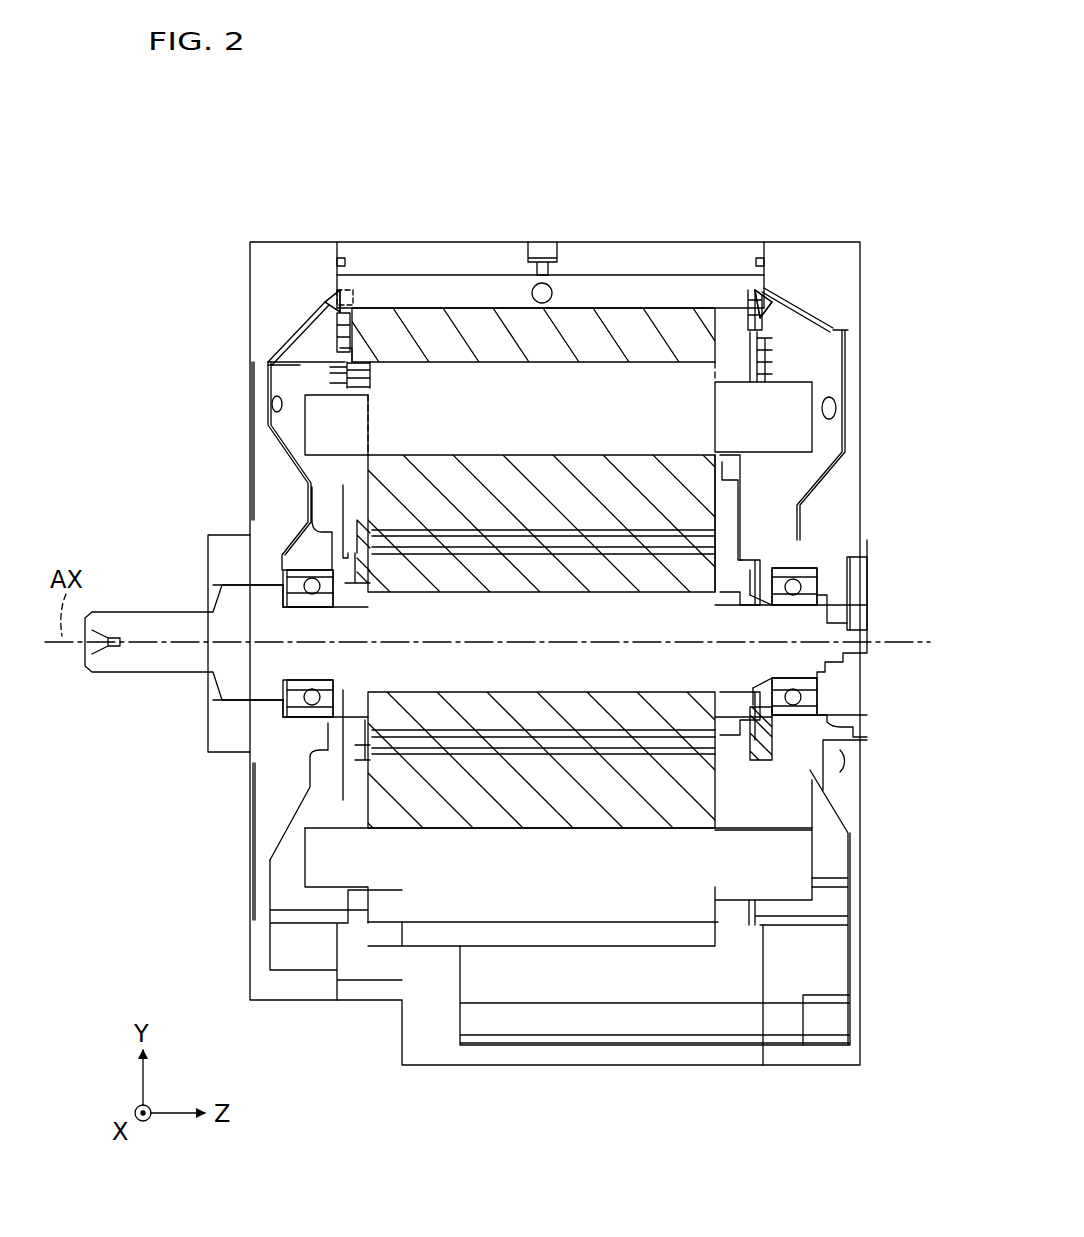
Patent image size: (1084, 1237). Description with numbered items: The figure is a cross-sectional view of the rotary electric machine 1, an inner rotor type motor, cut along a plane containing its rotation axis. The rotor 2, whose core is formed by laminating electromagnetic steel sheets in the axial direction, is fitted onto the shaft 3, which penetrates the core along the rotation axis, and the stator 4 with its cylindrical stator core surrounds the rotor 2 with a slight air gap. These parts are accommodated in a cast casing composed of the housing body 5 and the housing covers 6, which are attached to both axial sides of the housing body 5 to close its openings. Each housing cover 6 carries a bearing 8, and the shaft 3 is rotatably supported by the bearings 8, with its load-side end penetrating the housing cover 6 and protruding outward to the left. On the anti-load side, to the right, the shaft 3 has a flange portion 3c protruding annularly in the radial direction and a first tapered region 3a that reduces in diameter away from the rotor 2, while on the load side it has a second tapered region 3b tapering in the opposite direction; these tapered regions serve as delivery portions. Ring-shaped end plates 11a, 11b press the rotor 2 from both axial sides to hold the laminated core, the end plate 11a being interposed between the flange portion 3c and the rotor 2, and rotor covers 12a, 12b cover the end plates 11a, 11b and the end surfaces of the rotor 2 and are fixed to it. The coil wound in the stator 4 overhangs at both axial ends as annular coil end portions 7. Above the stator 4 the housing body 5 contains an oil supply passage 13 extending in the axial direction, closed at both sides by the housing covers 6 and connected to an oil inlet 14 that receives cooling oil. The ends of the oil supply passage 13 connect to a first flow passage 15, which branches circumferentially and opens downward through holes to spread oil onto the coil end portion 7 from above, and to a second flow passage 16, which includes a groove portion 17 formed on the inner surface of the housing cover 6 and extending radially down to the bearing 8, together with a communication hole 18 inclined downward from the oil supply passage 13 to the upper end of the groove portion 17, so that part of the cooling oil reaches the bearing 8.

The rotary electric machine 1 is at (720, 80).
The rotor 2 is at (423, 455).
The shaft 3 is at (112, 672).
The first tapered region 3a is at (753, 592).
The second tapered region 3b is at (333, 558).
The flange portion 3c is at (822, 742).
The stator 4 is at (620, 360).
The housing body 5 is at (662, 242).
The housing cover 6 is at (270, 238).
The coil end portion 7 is at (320, 396).
The bearing 8 is at (307, 718).
The end plate 11a is at (772, 760).
The end plate 11b is at (353, 758).
The rotor cover 12a is at (740, 485).
The rotor cover 12b is at (343, 493).
The oil supply passage 13 is at (496, 289).
The oil inlet 14 is at (552, 291).
The first flow passage 15 is at (342, 295).
The second flow passage 16 is at (547, 347).
The groove portion 17 is at (272, 405).
The communication hole 18 is at (300, 330).